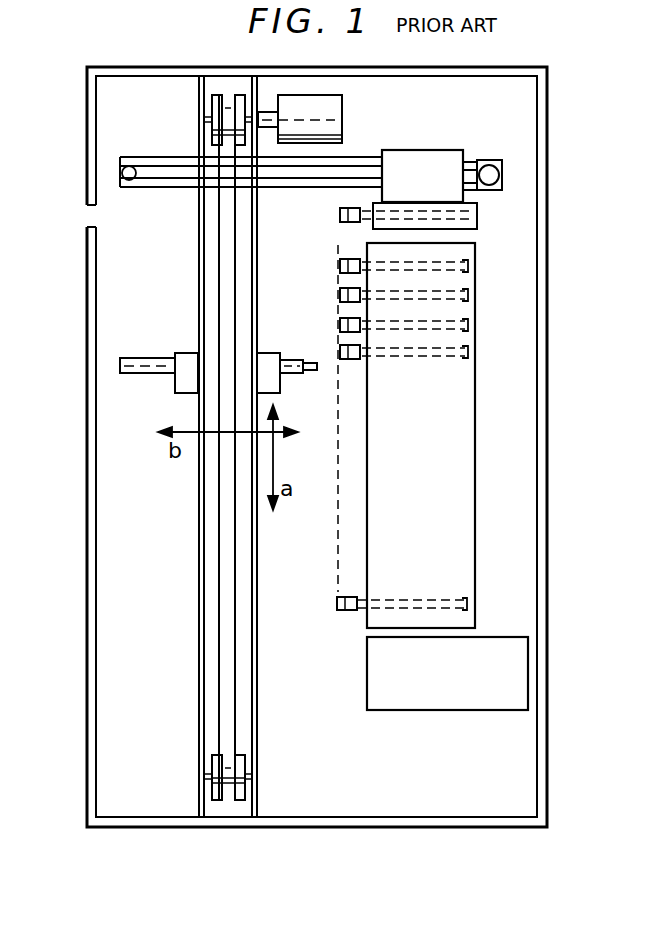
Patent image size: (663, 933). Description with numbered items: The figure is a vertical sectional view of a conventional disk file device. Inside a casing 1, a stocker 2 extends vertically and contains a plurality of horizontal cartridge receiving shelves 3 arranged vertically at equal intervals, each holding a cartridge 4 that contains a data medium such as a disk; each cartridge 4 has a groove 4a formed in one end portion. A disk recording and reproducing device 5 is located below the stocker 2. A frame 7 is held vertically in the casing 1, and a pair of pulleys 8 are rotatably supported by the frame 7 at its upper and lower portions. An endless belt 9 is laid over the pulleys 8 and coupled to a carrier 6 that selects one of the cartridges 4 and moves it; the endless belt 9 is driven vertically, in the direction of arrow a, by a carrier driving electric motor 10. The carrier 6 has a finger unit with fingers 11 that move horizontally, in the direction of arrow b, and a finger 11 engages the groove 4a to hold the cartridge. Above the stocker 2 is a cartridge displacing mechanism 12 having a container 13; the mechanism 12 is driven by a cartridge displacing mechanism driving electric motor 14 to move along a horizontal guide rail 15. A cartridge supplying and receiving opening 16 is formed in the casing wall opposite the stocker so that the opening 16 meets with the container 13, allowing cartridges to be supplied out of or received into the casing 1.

The casing 1 is at (548, 94).
The stocker 2 is at (476, 408).
The cartridge receiving shelves 3 is at (470, 352).
The cartridges 4 is at (340, 352).
The groove 4a is at (357, 258).
The disk recording and reproducing device 5 is at (477, 712).
The carrier 6 is at (186, 353).
The frame 7 is at (258, 758).
The pulleys 8 is at (212, 100).
The endless belt 9 is at (219, 556).
The carrier driving electric motor 10 is at (343, 106).
The fingers 11 is at (305, 360).
The cartridge displacing mechanism 12 is at (420, 148).
The container 13 is at (478, 224).
The cartridge displacing mechanism driving electric motor 14 is at (487, 160).
The horizontal guide rail 15 is at (346, 158).
The cartridge supplying and receiving opening 16 is at (88, 213).